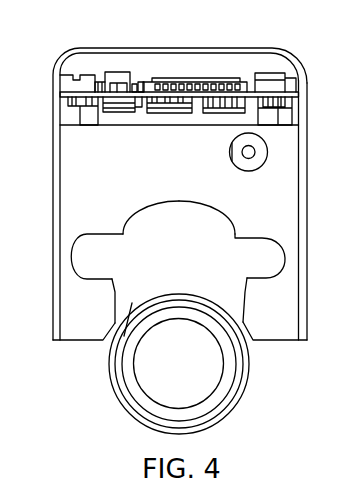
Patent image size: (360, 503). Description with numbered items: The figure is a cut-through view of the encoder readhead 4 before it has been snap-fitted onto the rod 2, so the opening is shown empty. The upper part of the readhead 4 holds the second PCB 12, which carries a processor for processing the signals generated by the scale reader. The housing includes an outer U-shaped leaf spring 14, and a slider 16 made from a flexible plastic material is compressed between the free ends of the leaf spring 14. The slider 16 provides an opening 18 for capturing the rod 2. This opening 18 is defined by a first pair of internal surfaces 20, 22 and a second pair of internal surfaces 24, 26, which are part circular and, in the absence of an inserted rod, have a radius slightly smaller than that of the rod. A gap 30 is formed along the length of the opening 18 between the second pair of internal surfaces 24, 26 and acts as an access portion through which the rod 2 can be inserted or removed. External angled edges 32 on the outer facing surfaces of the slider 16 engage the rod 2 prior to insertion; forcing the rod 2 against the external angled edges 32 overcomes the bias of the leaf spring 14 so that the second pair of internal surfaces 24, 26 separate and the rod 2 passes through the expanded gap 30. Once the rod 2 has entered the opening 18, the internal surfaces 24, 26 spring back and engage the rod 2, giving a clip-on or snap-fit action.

The rod 2 is at (177, 363).
The encoder readhead 4 is at (299, 62).
The second PCB 12 is at (167, 92).
The U-shaped leaf spring 14 is at (307, 313).
The slider 16 is at (283, 162).
The opening 18 is at (196, 242).
The first internal surface 20 is at (127, 230).
The first internal surface 22 is at (235, 228).
The second internal surface 24 is at (115, 292).
The second internal surface 26 is at (246, 292).
The gap 30 is at (124, 336).
The external angled edges 32 is at (110, 330).